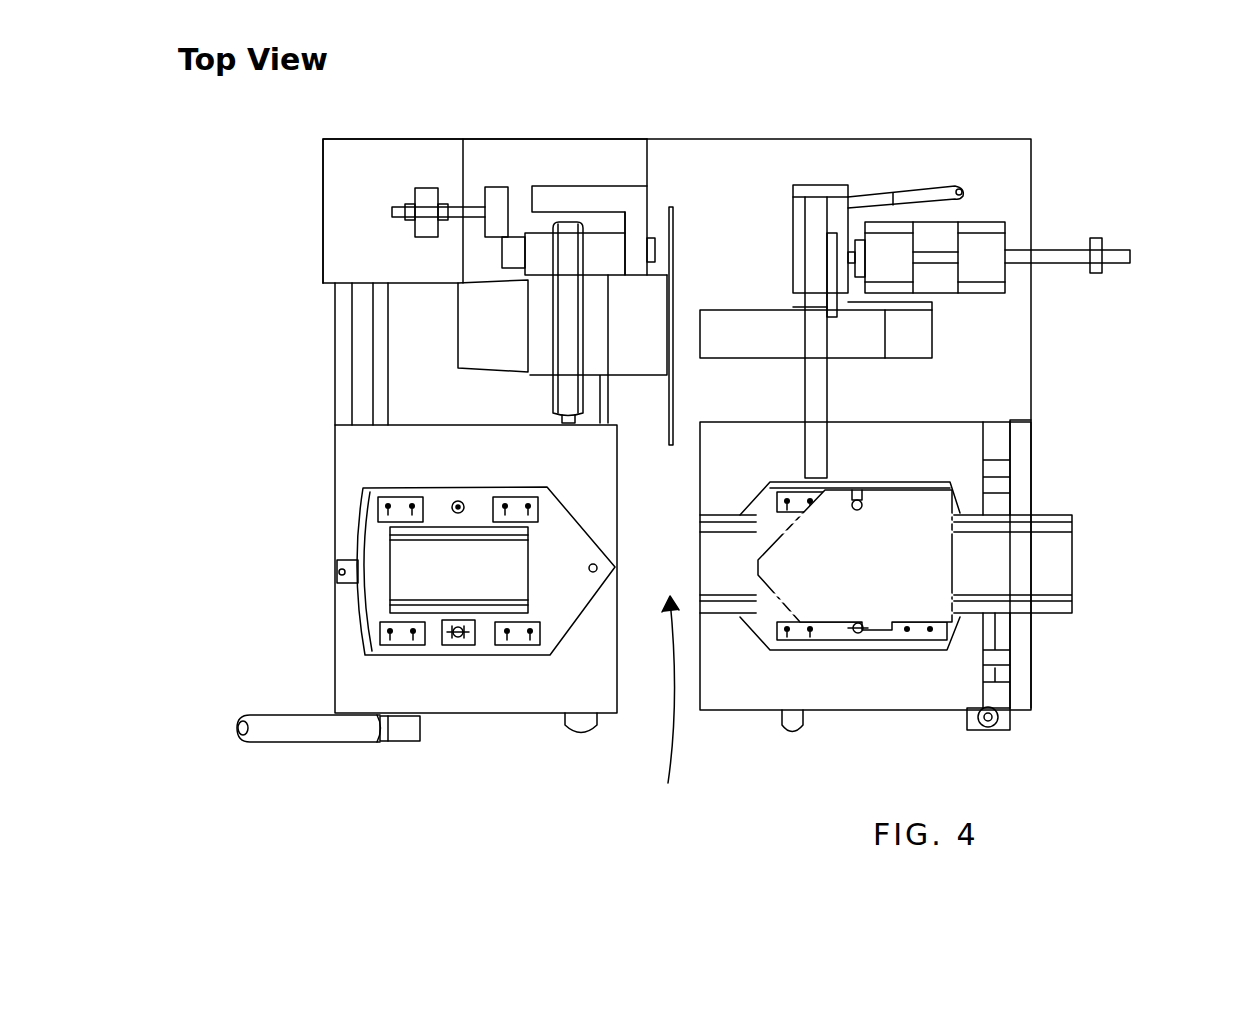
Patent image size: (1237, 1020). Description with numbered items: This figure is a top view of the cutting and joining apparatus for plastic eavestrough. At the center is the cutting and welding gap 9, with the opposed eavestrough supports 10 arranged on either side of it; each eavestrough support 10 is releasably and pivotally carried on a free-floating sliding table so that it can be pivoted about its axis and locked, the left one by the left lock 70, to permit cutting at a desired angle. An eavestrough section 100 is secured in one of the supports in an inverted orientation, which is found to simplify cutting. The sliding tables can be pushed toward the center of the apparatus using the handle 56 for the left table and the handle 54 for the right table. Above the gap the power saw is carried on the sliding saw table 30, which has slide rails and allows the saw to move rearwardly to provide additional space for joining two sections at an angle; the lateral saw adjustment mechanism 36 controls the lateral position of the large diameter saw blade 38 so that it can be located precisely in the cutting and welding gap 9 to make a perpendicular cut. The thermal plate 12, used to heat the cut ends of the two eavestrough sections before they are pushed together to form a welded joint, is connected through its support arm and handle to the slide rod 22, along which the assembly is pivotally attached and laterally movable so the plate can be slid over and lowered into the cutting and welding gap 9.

The cutting and welding gap 9 is at (671, 714).
The eavestrough support 10 is at (456, 467).
The thermal plate 12 is at (820, 402).
The slide rod 22 is at (1057, 255).
The sliding saw table 30 is at (340, 213).
The lateral saw adjustment mechanism 36 is at (423, 176).
The saw blade 38 is at (674, 258).
The handle 54 is at (1010, 718).
The handle 56 is at (300, 743).
The left lock 70 is at (338, 577).
The eavestrough section 100 is at (1012, 568).